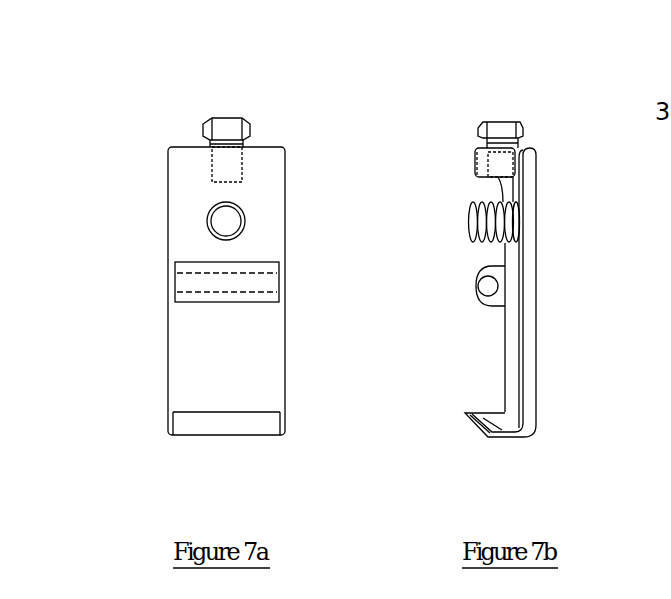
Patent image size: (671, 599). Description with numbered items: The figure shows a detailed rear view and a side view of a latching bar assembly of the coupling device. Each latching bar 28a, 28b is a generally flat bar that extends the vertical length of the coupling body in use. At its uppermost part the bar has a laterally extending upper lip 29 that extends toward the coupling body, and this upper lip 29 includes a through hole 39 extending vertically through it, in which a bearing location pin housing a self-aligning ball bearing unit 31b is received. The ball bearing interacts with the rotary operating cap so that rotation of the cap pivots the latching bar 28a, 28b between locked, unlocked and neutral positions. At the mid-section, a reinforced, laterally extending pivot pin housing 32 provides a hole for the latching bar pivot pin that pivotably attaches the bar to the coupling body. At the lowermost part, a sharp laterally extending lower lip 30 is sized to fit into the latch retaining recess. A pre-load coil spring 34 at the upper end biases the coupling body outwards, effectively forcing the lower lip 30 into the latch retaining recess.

In FIG. 7A, the latching bar 28a is at (226, 291).
In FIG. 7B, the latching bar 28b is at (536, 360).
In FIG. 7B, the upper lip 29 is at (480, 162).
In FIG. 7A, the lower lip 30 is at (187, 423).
In FIG. 7B, the lower lip 30 is at (482, 426).
In FIG. 7A, the self-aligning ball bearing unit 31b is at (238, 120).
In FIG. 7B, the self-aligning ball bearing unit 31b is at (523, 127).
In FIG. 7A, the pivot pin housing 32 is at (207, 302).
In FIG. 7B, the pre-load coil spring 34 is at (470, 223).
In FIG. 7A, the through hole 39 is at (212, 163).